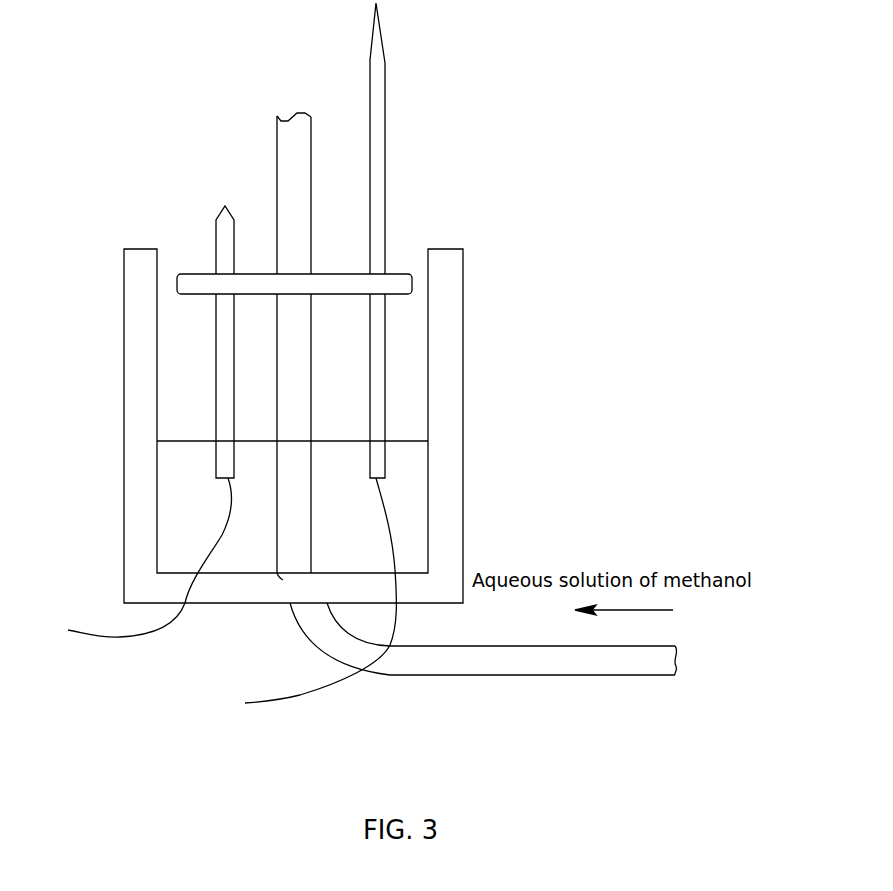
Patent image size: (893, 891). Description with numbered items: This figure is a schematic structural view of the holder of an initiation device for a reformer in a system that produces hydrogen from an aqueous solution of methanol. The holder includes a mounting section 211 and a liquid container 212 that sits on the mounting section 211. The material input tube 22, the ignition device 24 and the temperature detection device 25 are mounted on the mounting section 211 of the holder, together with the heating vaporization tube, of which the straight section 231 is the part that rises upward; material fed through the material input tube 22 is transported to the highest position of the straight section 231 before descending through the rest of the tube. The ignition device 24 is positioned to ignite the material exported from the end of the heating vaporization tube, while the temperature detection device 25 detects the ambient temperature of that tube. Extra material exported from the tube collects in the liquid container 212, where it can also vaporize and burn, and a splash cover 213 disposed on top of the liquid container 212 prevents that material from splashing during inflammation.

The material input tube 22 is at (528, 667).
The ignition device 24 is at (220, 325).
The temperature detection device 25 is at (385, 143).
The mounting section 211 is at (418, 497).
The liquid container 212 is at (418, 345).
The splash cover 213 is at (407, 281).
The straight section 231 is at (290, 153).